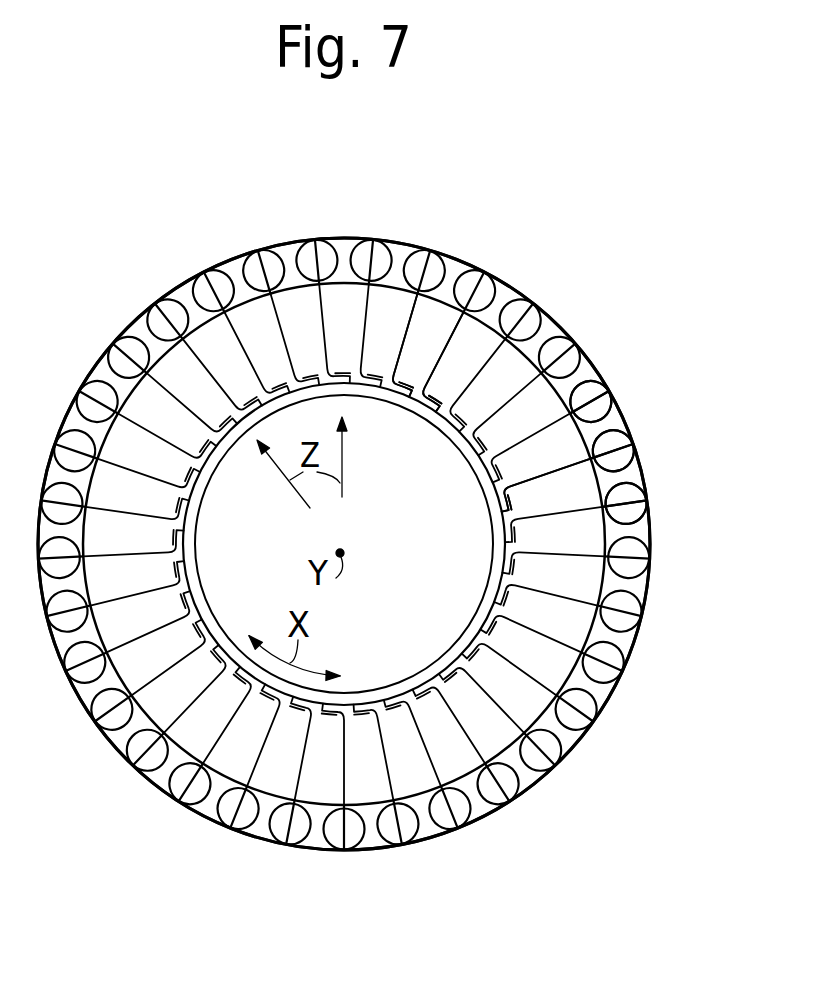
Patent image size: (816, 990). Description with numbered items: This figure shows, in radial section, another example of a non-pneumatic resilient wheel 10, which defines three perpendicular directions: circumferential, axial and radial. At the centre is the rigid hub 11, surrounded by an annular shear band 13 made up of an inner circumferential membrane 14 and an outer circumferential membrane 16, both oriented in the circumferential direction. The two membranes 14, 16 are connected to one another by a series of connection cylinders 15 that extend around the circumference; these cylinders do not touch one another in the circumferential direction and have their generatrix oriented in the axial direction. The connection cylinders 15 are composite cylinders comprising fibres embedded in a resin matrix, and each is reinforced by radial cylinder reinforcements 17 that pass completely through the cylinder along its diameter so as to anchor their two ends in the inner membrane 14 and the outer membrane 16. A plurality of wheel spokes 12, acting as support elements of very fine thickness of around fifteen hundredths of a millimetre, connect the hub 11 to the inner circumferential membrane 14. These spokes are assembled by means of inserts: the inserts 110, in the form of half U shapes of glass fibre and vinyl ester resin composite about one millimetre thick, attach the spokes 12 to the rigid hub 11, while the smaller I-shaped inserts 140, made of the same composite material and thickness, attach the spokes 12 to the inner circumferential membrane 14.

The non-pneumatic wheel 10 is at (554, 275).
The hub 11 is at (176, 528).
The wheel spokes 12 is at (424, 355).
The shear band 13 is at (129, 317).
The inner circumferential membrane 14 is at (239, 292).
The connection cylinders 15 is at (407, 247).
The outer circumferential membrane 16 is at (222, 253).
The radial cylinder reinforcements 17 is at (602, 440).
The inserts 110 is at (483, 491).
The inserts 140 is at (586, 502).